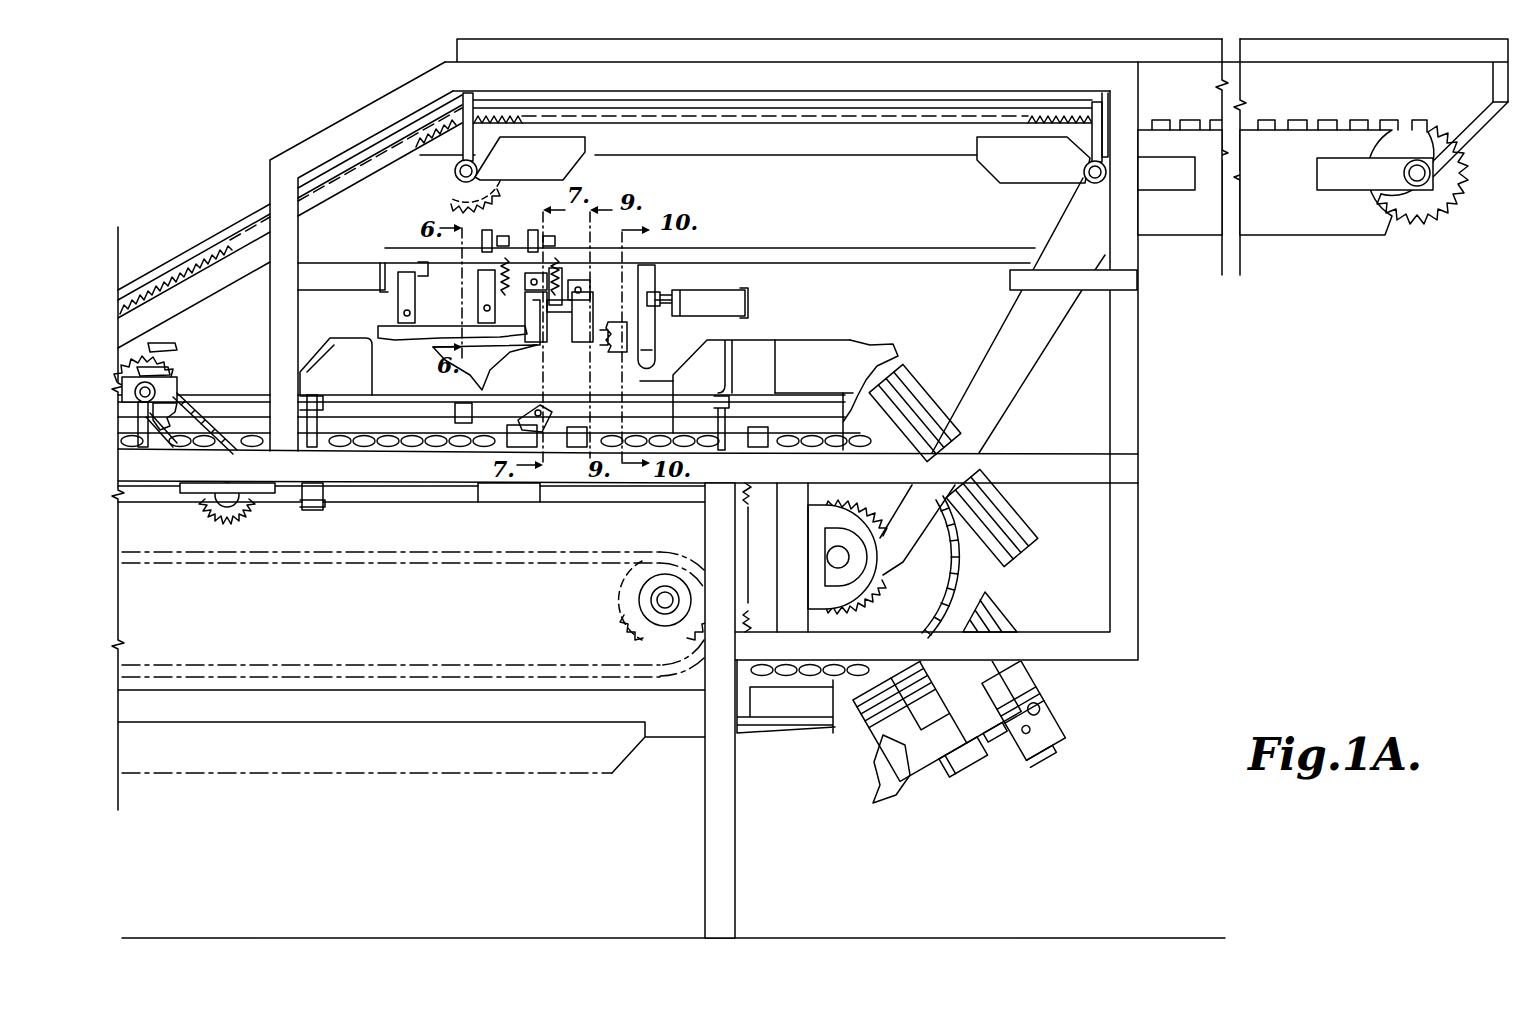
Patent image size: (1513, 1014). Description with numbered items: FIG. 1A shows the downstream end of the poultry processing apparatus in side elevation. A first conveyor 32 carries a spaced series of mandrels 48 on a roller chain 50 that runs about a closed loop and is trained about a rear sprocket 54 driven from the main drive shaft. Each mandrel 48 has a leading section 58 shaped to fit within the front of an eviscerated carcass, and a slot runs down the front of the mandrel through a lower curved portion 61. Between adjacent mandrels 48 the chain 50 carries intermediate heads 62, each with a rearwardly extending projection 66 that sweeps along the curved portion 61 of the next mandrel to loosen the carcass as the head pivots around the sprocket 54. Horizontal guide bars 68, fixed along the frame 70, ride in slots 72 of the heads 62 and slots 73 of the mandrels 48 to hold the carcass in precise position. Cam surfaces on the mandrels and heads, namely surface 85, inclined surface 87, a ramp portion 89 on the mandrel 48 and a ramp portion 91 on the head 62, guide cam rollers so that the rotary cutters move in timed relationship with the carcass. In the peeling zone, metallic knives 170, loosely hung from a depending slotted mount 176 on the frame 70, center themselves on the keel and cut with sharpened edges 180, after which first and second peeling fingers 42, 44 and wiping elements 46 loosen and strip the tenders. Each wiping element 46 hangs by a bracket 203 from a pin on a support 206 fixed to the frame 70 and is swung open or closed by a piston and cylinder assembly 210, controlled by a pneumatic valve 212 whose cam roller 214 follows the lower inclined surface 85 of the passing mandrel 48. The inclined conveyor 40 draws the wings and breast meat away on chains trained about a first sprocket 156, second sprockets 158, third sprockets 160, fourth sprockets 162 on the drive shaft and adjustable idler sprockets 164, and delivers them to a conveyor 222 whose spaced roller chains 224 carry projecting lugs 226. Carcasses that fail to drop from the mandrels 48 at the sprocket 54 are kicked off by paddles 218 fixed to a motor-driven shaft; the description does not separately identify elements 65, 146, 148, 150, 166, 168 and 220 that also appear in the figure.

The first conveyor 32 is at (450, 770).
The inclined conveyor 40 is at (197, 245).
The peeling fingers 42 is at (537, 343).
The peeling fingers 44 is at (532, 352).
The wiping elements 46 is at (608, 352).
The mandrels 48 is at (781, 334).
The roller chain 50 is at (957, 587).
The rear sprocket 54 is at (948, 563).
The leading section 58 is at (807, 343).
The curved portion 61 is at (870, 395).
The intermediate heads 62 is at (238, 375).
The pivot bracket 65 is at (825, 560).
The projection 66 is at (905, 378).
The horizontal guide bars 68 is at (693, 400).
The frame 70 is at (735, 857).
The slots 72 is at (1030, 522).
The slots 73 is at (743, 400).
The surface 85 is at (782, 418).
The inclined surface 87 is at (917, 420).
The ramp portion 89 is at (843, 417).
The ramp portion 91 is at (980, 490).
The finger 146 is at (156, 365).
The sprocket 148 is at (238, 513).
The bracket 150 is at (203, 510).
The first sprocket 156 is at (485, 108).
The second pair of sprockets 158 is at (527, 188).
The third pair of sprockets 160 is at (1063, 188).
The fourth pair of sprockets 162 is at (865, 522).
The adjustable idler sprockets 164 is at (625, 615).
The sled 166 is at (425, 323).
The chain 168 is at (250, 214).
The metallic knives 170 is at (454, 305).
The depending slotted mount 176 is at (485, 275).
The sharpened edges 180 is at (482, 392).
The bracket 203 is at (652, 332).
The support 206 is at (653, 275).
The piston and cylinder assembly 210 is at (729, 290).
The pneumatic valve 212 is at (490, 452).
The cam roller 214 is at (545, 435).
The paddles 218 is at (1062, 725).
The cylinder 220 is at (972, 760).
The conveyor 222 is at (1369, 121).
The roller chains 224 is at (1455, 212).
The lugs 226 is at (1300, 120).